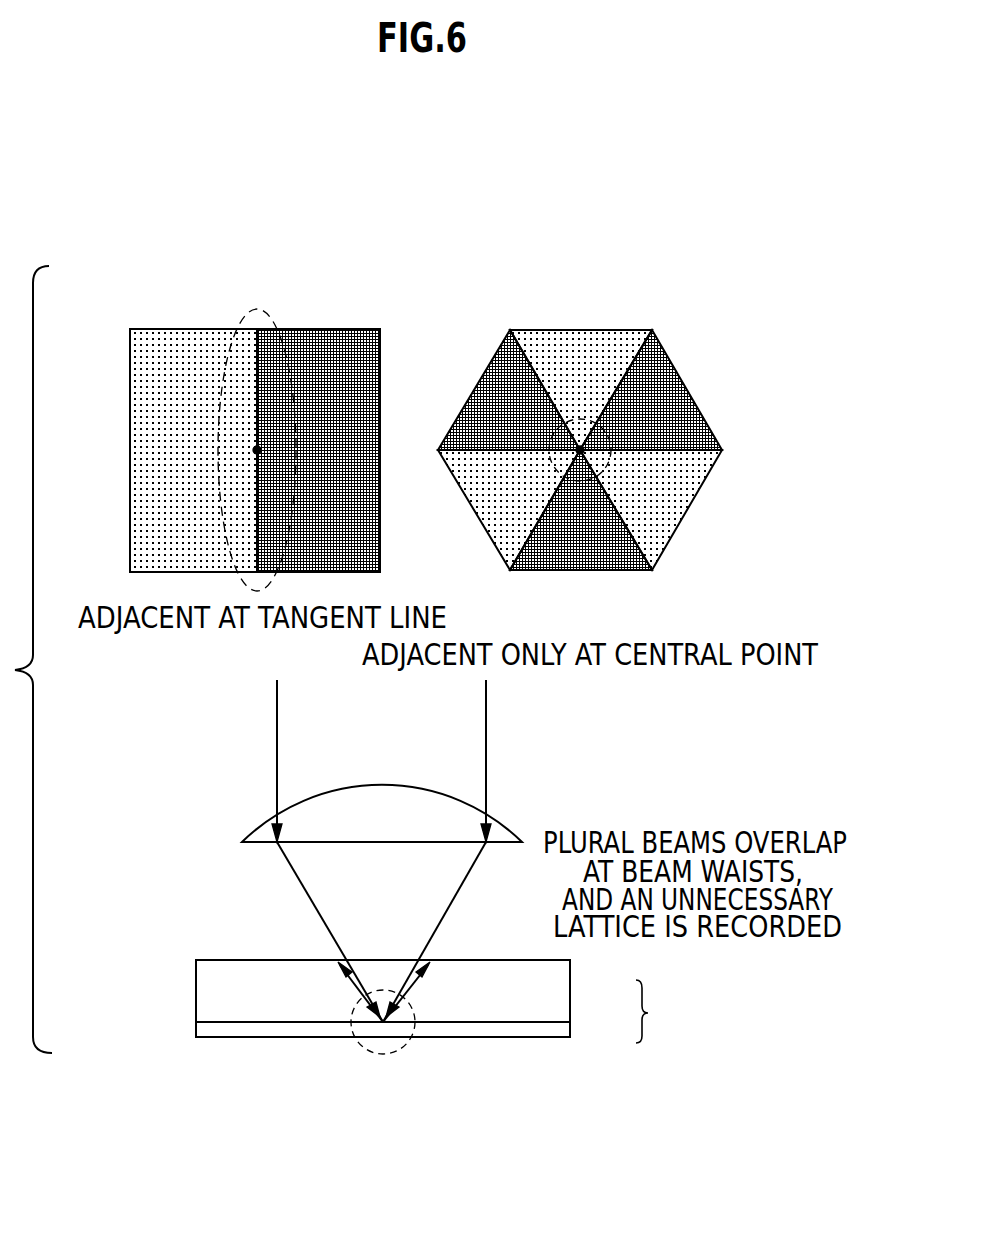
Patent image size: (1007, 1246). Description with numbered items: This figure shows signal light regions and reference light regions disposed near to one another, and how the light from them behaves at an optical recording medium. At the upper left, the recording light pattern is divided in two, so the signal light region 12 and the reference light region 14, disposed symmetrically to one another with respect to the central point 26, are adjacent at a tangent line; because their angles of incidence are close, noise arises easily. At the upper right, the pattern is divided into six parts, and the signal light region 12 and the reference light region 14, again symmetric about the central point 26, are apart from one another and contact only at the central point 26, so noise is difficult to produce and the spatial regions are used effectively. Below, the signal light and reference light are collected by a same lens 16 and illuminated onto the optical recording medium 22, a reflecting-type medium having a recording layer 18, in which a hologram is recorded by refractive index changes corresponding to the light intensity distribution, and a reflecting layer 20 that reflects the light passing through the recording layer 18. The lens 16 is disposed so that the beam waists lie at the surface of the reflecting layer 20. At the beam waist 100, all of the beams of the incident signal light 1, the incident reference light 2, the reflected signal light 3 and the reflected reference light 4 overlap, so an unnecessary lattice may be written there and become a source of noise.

The incident signal light 1 is at (486, 742).
The incident reference light 2 is at (277, 742).
The reflected signal light 3 is at (357, 993).
The reflected reference light 4 is at (413, 993).
The signal light region 12 is at (178, 330).
The reference light region 14 is at (345, 330).
The lens 16 is at (395, 787).
The recording layer 18 is at (572, 993).
The reflecting layer 20 is at (572, 1030).
The optical recording medium 22 is at (661, 1011).
The central point 26 is at (257, 450).
The beam waist 100 is at (385, 1055).